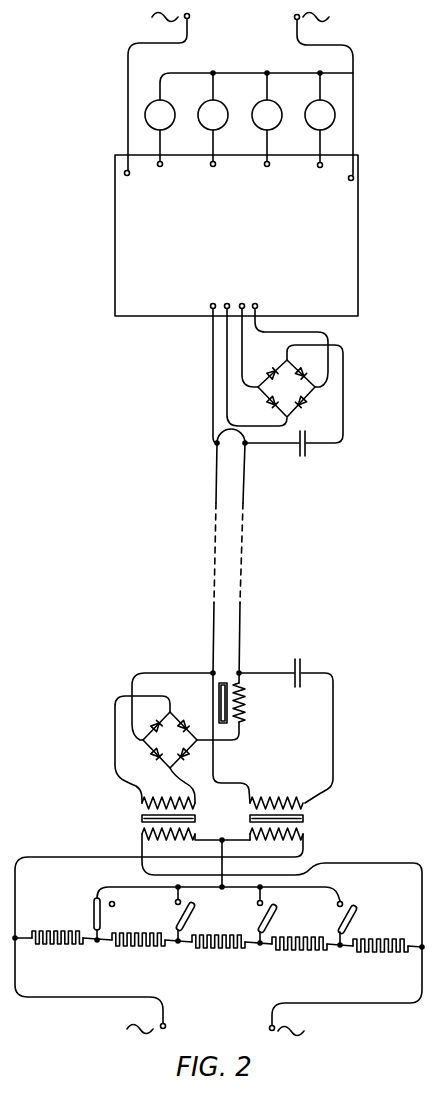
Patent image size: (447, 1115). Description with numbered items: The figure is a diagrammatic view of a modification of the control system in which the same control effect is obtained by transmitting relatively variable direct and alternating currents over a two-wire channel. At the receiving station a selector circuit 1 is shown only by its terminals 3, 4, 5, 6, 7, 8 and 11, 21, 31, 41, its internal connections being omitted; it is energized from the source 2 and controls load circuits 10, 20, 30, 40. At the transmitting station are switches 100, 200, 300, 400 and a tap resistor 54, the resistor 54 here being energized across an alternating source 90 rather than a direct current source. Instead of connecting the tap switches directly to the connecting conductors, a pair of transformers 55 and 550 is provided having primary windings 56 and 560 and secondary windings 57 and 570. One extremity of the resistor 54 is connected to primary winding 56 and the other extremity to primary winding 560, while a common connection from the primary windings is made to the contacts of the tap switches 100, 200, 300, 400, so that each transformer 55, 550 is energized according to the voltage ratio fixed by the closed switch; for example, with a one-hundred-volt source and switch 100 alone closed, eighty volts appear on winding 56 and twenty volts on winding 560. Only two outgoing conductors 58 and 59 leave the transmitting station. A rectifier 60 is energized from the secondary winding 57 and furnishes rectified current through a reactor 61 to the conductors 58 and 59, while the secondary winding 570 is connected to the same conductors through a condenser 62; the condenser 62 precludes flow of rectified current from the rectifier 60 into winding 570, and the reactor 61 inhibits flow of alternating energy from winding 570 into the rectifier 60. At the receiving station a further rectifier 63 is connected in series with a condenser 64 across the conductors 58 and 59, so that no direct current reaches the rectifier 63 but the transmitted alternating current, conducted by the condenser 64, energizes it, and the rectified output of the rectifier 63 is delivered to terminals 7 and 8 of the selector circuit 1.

The selector circuit 1 is at (363, 155).
The source 2 is at (240, 92).
The terminal 3 is at (113, 177).
The terminal 4 is at (361, 183).
The terminal 5 is at (210, 302).
The terminal 6 is at (225, 302).
The terminal 7 is at (245, 302).
The terminal 8 is at (259, 302).
The load circuit 10 is at (160, 130).
The load circuit 20 is at (213, 117).
The load circuit 30 is at (267, 117).
The load circuit 40 is at (320, 117).
The terminal 11 is at (155, 176).
The terminal 21 is at (206, 176).
The terminal 31 is at (261, 177).
The terminal 41 is at (313, 178).
The tap resistor 54 is at (218, 955).
The transformer 55 is at (154, 818).
The transformer 550 is at (293, 824).
The primary winding 56 is at (134, 831).
The primary winding 560 is at (308, 836).
The secondary winding 57 is at (137, 801).
The secondary winding 570 is at (308, 805).
The outgoing conductor 58 is at (218, 623).
The outgoing conductor 59 is at (252, 563).
The rectifier 60 is at (164, 738).
The reactor 61 is at (231, 711).
The condenser 62 is at (309, 670).
The rectifier 63 is at (279, 395).
The condenser 64 is at (315, 453).
The alternating source 90 is at (215, 1028).
The switch 100 is at (85, 919).
The switch 200 is at (167, 921).
The switch 300 is at (251, 922).
The switch 400 is at (331, 924).